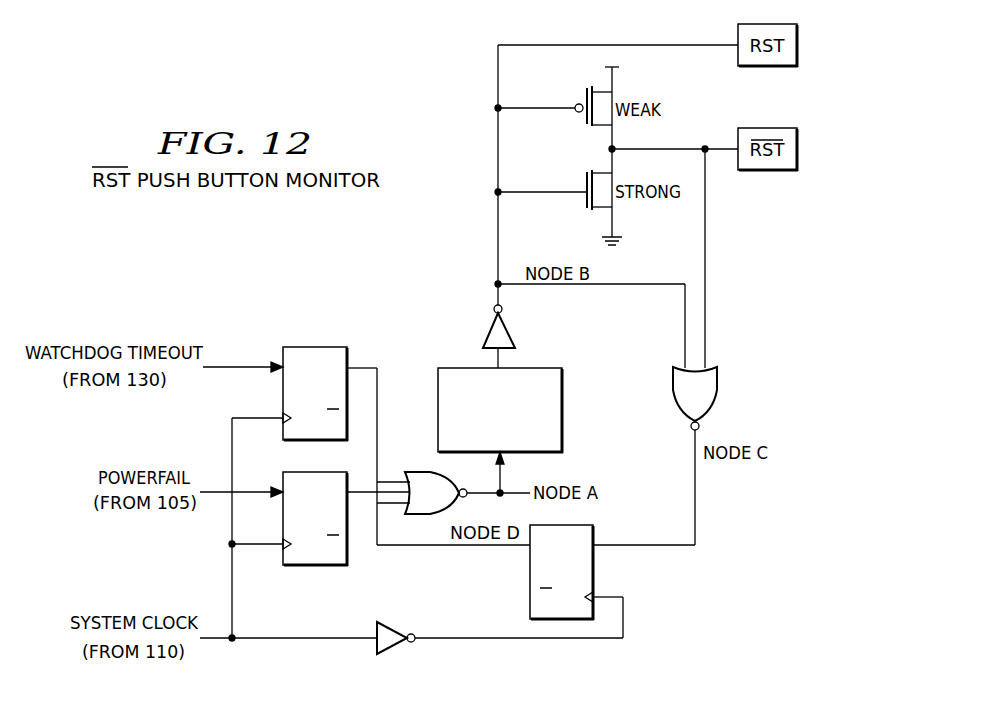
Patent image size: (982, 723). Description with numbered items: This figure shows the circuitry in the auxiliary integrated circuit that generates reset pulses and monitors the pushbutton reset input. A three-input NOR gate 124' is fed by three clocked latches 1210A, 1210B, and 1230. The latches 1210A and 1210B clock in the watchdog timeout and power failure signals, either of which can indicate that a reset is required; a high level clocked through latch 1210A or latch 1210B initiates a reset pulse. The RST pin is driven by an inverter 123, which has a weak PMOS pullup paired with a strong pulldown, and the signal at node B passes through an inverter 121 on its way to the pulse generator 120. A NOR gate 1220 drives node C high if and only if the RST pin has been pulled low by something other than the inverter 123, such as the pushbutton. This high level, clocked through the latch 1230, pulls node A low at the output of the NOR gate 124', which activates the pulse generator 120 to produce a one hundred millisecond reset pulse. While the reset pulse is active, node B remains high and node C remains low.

The inverter 123 is at (567, 117).
The inverter 121 is at (489, 330).
The pulse generator 120 is at (532, 368).
The clocked latch 1210A is at (316, 347).
The clocked latch 1210B is at (316, 565).
The three-input NOR gate 124' is at (453, 456).
The NOR gate 1220 is at (679, 406).
The clocked latch 1230 is at (530, 575).